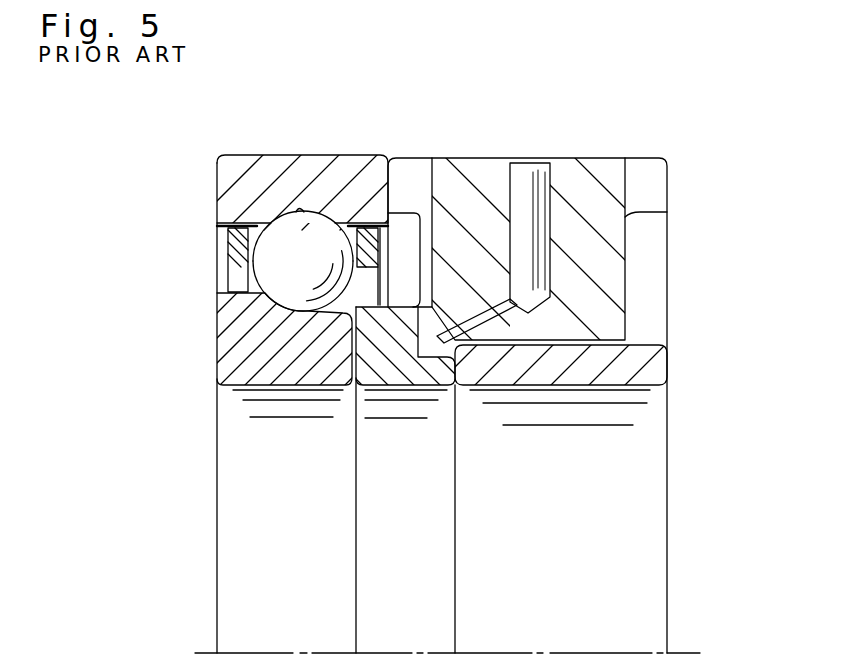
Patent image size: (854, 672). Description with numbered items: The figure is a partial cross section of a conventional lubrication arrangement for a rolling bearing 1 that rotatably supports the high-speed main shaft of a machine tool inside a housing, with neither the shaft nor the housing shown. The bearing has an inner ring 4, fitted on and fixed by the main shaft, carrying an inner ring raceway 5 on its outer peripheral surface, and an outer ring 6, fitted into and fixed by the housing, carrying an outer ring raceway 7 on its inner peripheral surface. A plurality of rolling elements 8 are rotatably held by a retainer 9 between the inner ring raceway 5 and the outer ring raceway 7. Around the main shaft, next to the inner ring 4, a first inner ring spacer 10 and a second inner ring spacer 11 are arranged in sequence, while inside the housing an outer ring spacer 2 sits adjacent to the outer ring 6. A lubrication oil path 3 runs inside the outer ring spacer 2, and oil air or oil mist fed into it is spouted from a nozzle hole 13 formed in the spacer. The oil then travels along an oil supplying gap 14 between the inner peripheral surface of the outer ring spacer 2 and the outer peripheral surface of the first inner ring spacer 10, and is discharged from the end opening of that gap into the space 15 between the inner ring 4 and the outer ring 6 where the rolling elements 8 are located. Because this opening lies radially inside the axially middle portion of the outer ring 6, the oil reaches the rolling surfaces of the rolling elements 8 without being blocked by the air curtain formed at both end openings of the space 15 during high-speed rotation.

The rolling bearing 1 is at (210, 168).
The outer ring spacer 2 is at (617, 252).
The lubrication oil path 3 is at (545, 213).
The inner ring 4 is at (263, 382).
The inner ring raceway 5 is at (262, 373).
The outer ring 6 is at (275, 173).
The outer ring raceway 7 is at (301, 209).
The rolling elements 8 is at (270, 279).
The retainer 9 is at (233, 247).
The first inner ring spacer 10 is at (388, 330).
The second inner ring spacer 11 is at (655, 362).
The nozzle hole 13 is at (493, 317).
The oil supplying gap 14 is at (388, 325).
The space 15 is at (345, 310).